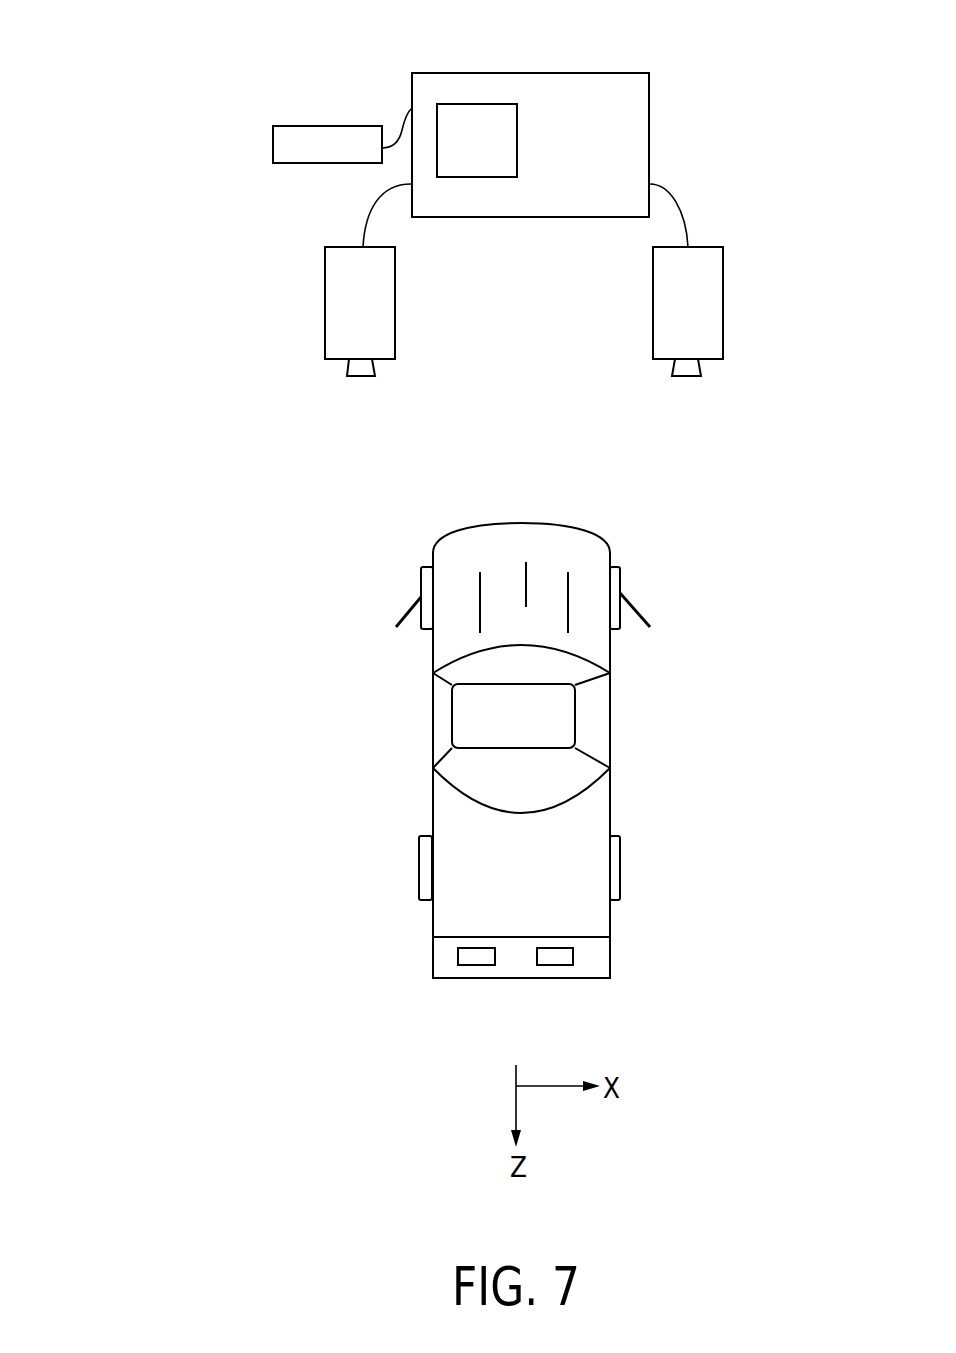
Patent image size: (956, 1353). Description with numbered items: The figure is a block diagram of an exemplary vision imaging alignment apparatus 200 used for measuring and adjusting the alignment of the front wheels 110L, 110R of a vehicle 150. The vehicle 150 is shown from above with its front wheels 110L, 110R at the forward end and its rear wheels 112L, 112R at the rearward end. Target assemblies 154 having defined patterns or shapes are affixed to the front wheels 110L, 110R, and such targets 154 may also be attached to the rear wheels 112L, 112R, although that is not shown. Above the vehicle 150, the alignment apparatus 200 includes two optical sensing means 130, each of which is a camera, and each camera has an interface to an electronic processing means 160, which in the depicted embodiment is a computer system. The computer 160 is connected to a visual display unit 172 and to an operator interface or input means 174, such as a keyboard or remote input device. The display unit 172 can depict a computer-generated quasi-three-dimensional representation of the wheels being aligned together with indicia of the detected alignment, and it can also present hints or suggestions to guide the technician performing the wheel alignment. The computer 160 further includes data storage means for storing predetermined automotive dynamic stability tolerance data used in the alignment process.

The vision imaging alignment apparatus 200 is at (178, 103).
The visual display unit 172 is at (469, 73).
The electronic processing means 160 is at (508, 104).
The operator interface or input means 174 is at (333, 134).
The optical sensing means 130 is at (396, 304).
The vehicle 150 is at (432, 735).
The target assemblies 154 is at (407, 616).
The left front wheel 110L is at (418, 620).
The right front wheel 110R is at (622, 620).
The left rear wheel 112L is at (418, 890).
The right rear wheel 112R is at (621, 890).